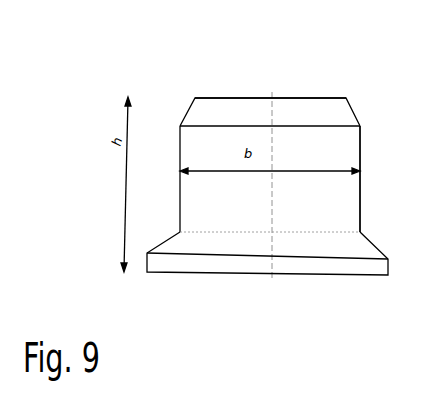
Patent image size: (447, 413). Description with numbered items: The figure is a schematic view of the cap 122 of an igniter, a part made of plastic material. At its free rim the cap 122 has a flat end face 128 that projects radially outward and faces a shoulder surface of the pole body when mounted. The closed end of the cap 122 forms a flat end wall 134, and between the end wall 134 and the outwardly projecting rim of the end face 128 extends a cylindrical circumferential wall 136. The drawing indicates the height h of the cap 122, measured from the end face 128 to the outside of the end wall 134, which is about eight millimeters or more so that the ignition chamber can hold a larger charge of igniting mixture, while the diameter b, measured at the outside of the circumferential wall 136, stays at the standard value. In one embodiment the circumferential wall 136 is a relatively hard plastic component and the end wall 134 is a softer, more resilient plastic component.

The cap 122 is at (233, 68).
The end face 128 is at (165, 273).
The end wall 134 is at (288, 98).
The circumferential wall 136 is at (345, 206).